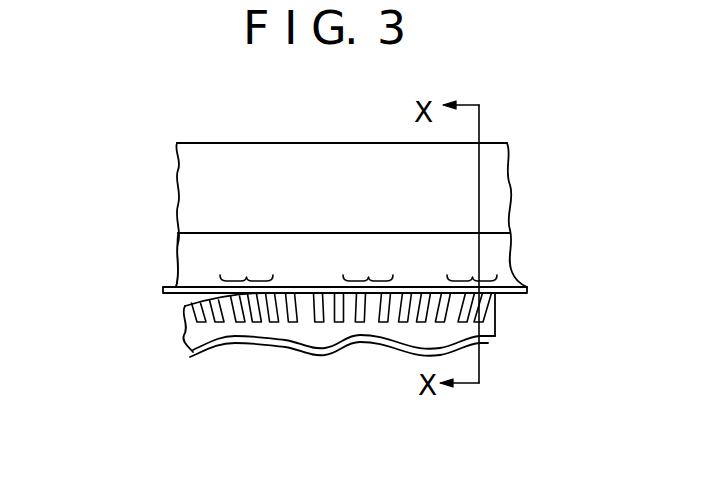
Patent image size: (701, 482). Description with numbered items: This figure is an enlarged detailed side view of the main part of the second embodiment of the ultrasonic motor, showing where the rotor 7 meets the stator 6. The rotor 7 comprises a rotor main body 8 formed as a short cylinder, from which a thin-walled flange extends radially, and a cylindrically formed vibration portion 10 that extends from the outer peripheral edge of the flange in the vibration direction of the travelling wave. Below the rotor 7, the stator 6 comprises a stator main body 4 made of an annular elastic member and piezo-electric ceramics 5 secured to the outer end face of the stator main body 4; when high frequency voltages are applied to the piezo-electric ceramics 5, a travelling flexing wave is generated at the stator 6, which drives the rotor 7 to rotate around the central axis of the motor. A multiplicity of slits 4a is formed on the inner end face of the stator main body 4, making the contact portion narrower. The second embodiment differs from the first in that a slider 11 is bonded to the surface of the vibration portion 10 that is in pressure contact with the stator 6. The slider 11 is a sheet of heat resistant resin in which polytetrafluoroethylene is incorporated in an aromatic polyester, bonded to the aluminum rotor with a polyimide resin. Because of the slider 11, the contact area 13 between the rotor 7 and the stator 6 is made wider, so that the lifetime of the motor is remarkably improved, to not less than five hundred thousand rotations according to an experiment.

The rotor 7 is at (165, 203).
The rotor main body 8 is at (192, 162).
The vibration portion 10 is at (187, 250).
The slider 11 is at (523, 283).
The contact area 13 is at (358, 263).
The stator 6 is at (170, 337).
The stator main body 4 is at (237, 325).
The slits 4a is at (383, 296).
The piezo-electric ceramics 5 is at (293, 352).